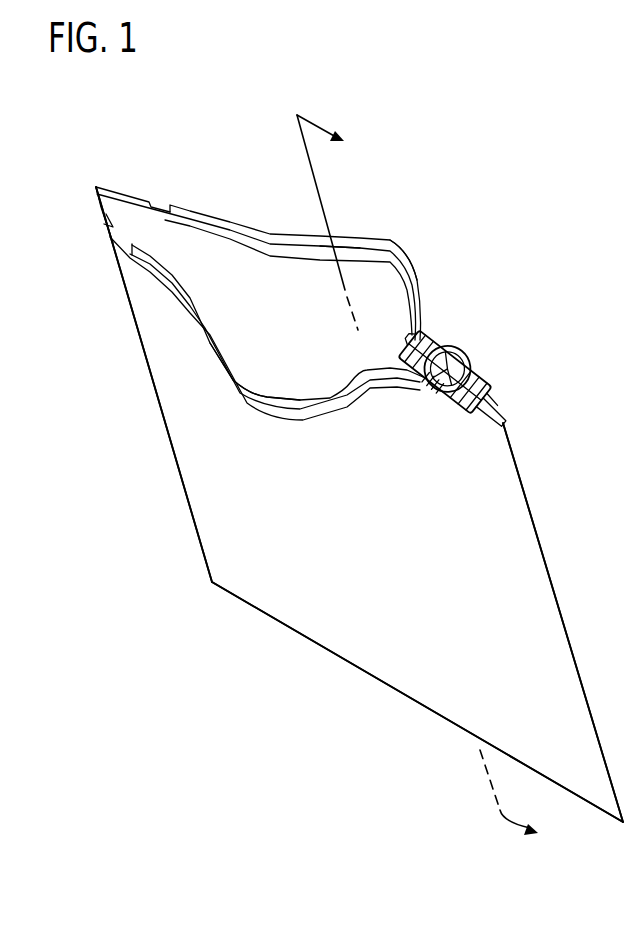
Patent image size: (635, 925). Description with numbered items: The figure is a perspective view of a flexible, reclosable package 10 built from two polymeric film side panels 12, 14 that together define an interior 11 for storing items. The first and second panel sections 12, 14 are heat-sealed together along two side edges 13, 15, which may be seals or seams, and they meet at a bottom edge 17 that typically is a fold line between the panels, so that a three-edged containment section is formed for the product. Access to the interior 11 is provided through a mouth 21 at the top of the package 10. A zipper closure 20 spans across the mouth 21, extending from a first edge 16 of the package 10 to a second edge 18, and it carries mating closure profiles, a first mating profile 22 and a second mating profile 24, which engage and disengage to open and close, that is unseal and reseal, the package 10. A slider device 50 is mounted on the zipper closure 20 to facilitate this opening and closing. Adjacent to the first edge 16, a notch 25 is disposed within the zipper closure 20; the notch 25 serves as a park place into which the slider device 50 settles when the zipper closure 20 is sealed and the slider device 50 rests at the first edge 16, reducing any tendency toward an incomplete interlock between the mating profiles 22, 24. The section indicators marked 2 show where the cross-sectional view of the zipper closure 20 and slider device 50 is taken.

The flexible, reclosable package 10 is at (527, 278).
The interior 11 is at (364, 282).
The side panel 12 is at (175, 390).
The side edge 13 is at (196, 527).
The side panel 14 is at (247, 263).
The side edge 15 is at (558, 597).
The first edge 16 is at (95, 187).
The bottom edge 17 is at (393, 691).
The second edge 18 is at (503, 408).
The zipper closure 20 is at (155, 280).
The mouth 21 is at (200, 217).
The first mating profile 22 is at (221, 363).
The second mating profile 24 is at (403, 262).
The notch 25 is at (152, 201).
The slider device 50 is at (463, 355).
The section line 2 is at (428, 483).